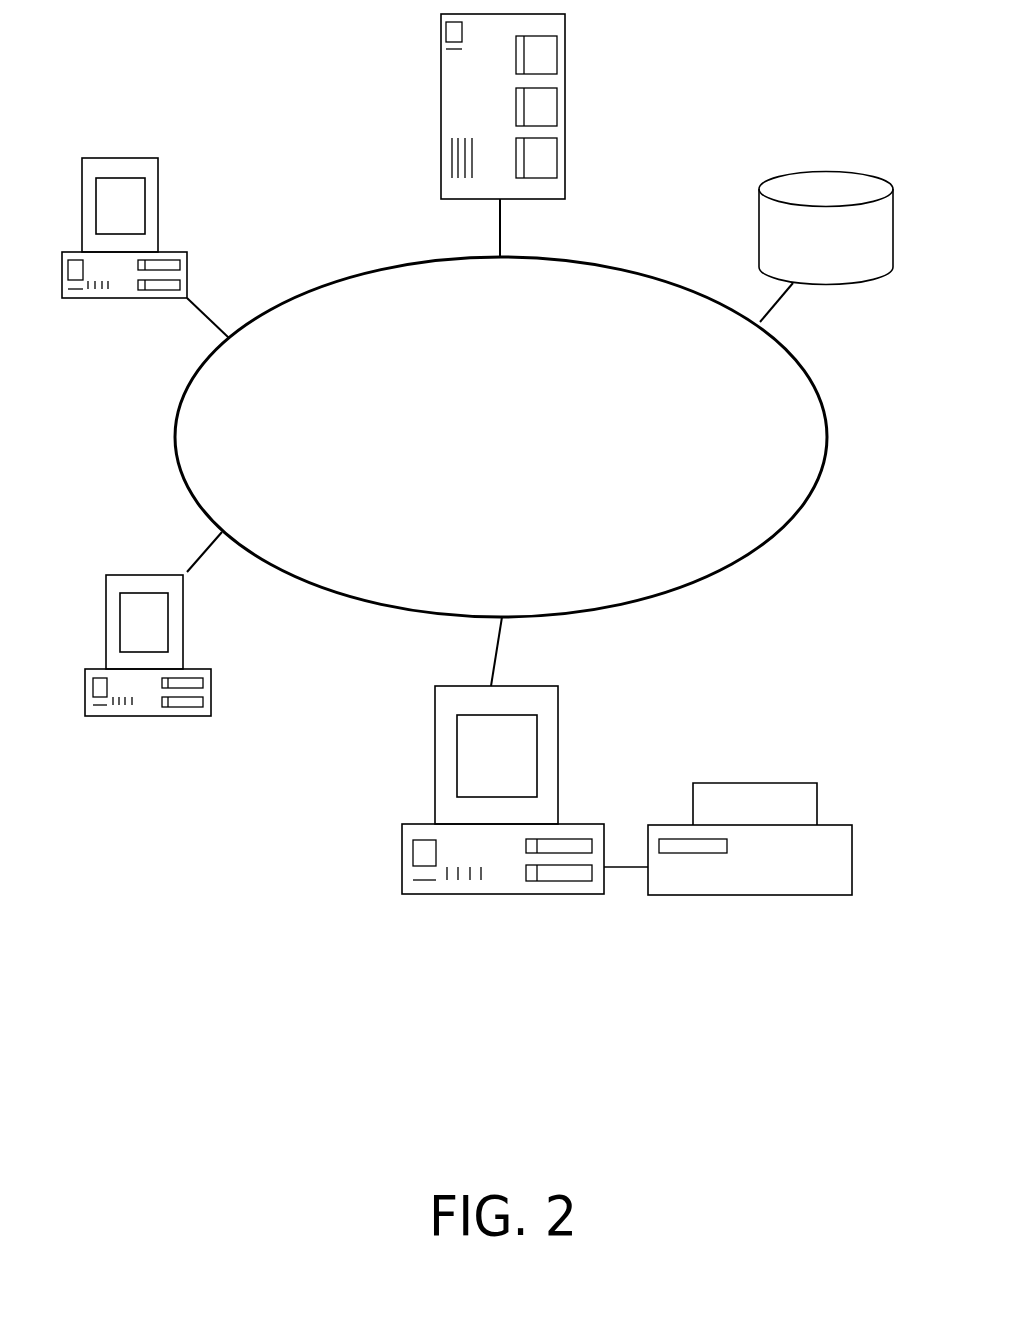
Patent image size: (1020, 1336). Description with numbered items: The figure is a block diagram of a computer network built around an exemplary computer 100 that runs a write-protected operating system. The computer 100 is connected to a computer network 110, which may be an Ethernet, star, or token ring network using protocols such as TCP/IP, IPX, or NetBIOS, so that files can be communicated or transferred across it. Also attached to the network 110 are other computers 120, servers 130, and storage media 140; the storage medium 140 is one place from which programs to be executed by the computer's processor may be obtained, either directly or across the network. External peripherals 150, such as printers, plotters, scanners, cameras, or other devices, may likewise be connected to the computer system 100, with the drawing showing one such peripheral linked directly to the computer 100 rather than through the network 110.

The computer 100 is at (402, 812).
The computer network 110 is at (737, 577).
The other computers 120 is at (150, 142).
The servers 130 is at (579, 143).
The computer-readable storage medium 140 is at (850, 157).
The external peripherals 150 is at (768, 906).